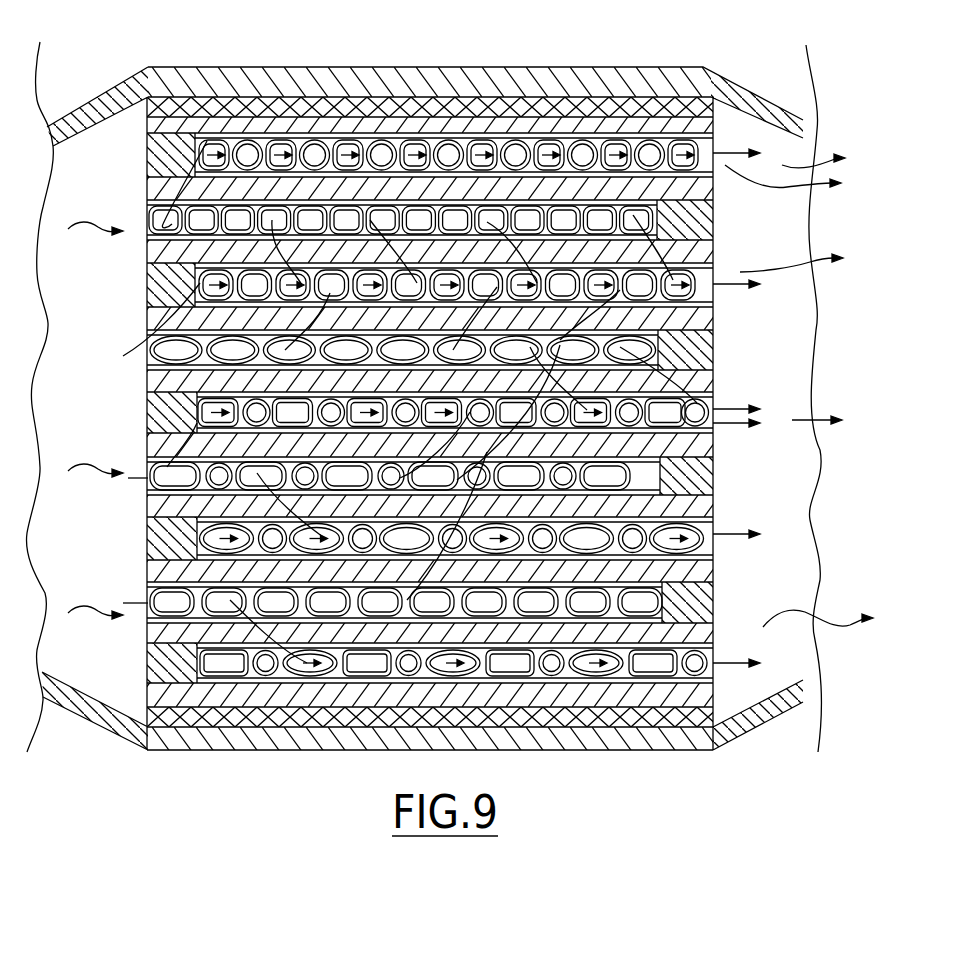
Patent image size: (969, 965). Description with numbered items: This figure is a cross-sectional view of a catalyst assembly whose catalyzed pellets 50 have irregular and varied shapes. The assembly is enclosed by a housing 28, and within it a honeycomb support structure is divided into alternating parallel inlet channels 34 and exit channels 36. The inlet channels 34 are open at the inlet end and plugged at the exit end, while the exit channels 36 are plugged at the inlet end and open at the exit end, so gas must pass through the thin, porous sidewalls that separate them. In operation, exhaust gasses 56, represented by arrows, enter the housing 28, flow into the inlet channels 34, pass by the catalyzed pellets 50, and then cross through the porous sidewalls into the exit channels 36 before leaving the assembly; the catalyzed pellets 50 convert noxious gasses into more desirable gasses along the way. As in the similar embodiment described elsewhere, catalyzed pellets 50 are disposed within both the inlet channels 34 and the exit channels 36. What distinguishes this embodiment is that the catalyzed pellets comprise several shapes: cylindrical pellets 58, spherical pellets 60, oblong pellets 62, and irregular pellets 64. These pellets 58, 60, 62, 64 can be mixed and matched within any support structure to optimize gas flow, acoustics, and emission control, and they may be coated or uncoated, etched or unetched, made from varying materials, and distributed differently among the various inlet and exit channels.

The housing 28 is at (217, 68).
The catalyzed pellets 50 is at (233, 216).
The inlet channels 34 is at (325, 216).
The exit channels 36 is at (365, 212).
The exhaust gasses 56 is at (91, 471).
The cylindrical pellets 58 is at (657, 668).
The spherical pellets 60 is at (557, 668).
The oblong pellets 62 is at (613, 668).
The irregular pellets 64 is at (197, 520).